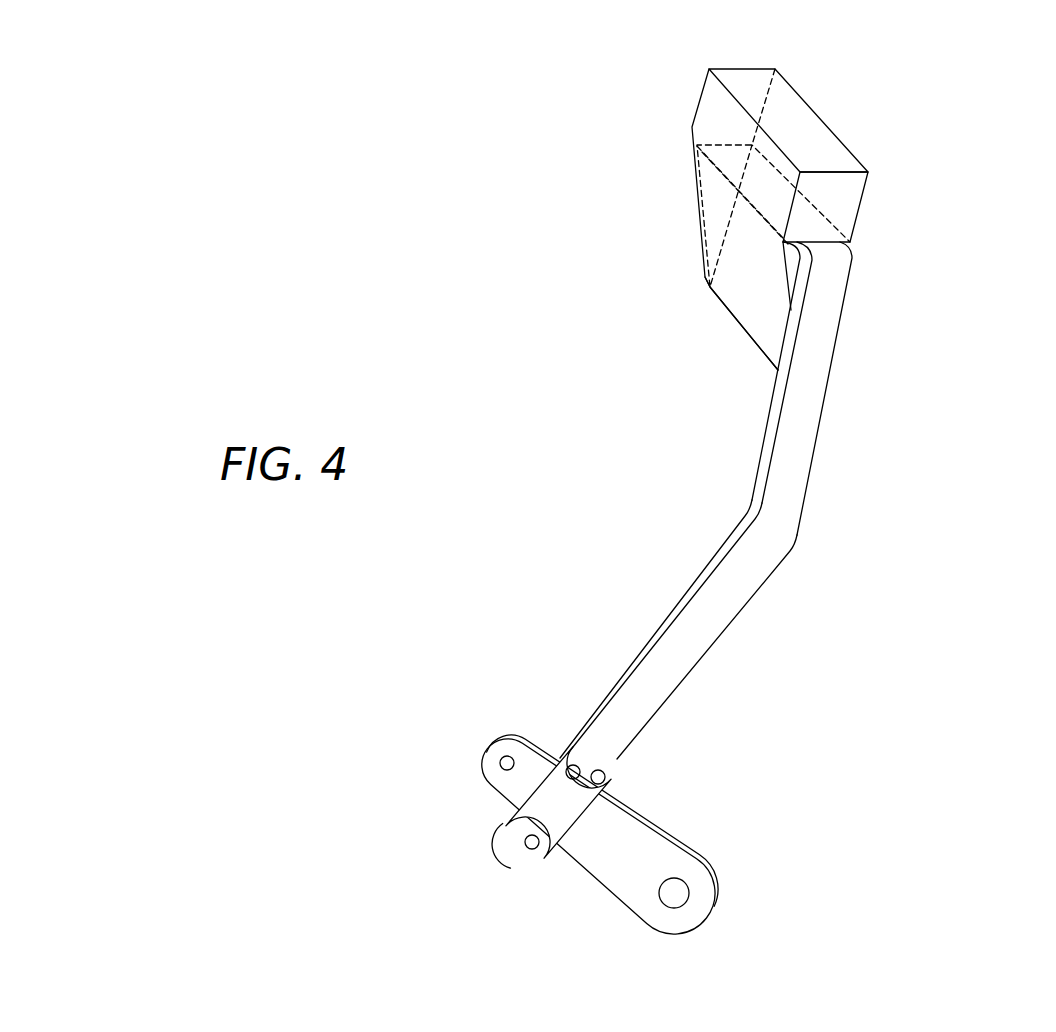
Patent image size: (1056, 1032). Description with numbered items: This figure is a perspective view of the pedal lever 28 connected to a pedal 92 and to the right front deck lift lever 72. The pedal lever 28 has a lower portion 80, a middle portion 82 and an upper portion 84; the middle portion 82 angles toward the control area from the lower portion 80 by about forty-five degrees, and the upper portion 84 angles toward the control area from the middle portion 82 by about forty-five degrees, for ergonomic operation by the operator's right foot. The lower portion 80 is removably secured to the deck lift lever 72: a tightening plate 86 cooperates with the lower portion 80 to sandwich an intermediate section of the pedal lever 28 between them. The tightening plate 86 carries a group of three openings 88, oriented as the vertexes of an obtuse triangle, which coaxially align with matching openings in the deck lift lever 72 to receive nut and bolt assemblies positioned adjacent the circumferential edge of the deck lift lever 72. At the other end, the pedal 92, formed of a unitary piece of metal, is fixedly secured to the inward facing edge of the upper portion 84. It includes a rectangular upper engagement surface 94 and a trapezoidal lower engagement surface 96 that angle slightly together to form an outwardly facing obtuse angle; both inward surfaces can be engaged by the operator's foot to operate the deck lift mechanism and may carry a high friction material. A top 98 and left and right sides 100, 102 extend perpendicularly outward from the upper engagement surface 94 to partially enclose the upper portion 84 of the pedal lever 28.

The pedal lever 28 is at (858, 442).
The right front deck lift lever 72 is at (714, 890).
The lower portion 80 is at (703, 672).
The middle portion 82 is at (805, 498).
The upper portion 84 is at (828, 224).
The tightening plate 86 is at (542, 867).
The openings 88 is at (600, 771).
The pedal 92 is at (649, 239).
The upper engagement surface 94 is at (720, 110).
The lower engagement surface 96 is at (748, 301).
The top 98 is at (793, 110).
The left side 100 is at (867, 183).
The right side 102 is at (713, 128).